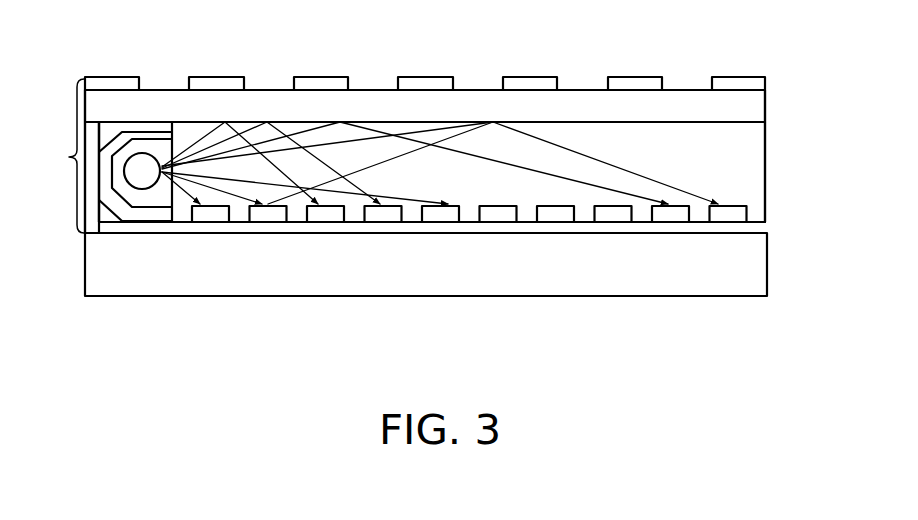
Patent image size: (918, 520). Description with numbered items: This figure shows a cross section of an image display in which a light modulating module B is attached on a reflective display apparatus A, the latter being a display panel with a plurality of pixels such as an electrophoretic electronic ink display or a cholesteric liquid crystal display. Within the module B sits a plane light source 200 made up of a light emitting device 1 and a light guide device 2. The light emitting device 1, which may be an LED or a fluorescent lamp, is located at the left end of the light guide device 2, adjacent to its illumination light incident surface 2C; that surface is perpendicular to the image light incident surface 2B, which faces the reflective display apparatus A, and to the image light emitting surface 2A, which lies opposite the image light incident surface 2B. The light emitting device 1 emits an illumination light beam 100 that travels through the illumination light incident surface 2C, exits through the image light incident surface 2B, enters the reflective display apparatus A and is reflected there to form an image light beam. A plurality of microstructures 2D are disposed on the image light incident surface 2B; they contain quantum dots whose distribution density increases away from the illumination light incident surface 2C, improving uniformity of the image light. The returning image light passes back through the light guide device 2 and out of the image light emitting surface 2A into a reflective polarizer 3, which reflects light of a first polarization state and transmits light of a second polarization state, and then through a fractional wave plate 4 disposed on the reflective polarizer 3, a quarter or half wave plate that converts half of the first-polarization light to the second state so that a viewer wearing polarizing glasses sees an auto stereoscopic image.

The light emitting device 1 is at (149, 184).
The light guide device 2 is at (736, 182).
The image light emitting surface 2A is at (753, 118).
The image light incident surface 2B is at (757, 218).
The illumination light incident surface 2C is at (163, 223).
The microstructures 2D is at (673, 218).
The reflective polarizer 3 is at (768, 110).
The fractional wave plate 4 is at (768, 84).
The illumination light beam 100 is at (412, 207).
The plane light source 200 is at (768, 167).
The reflective display apparatus A is at (768, 260).
The light modulating module B is at (64, 156).